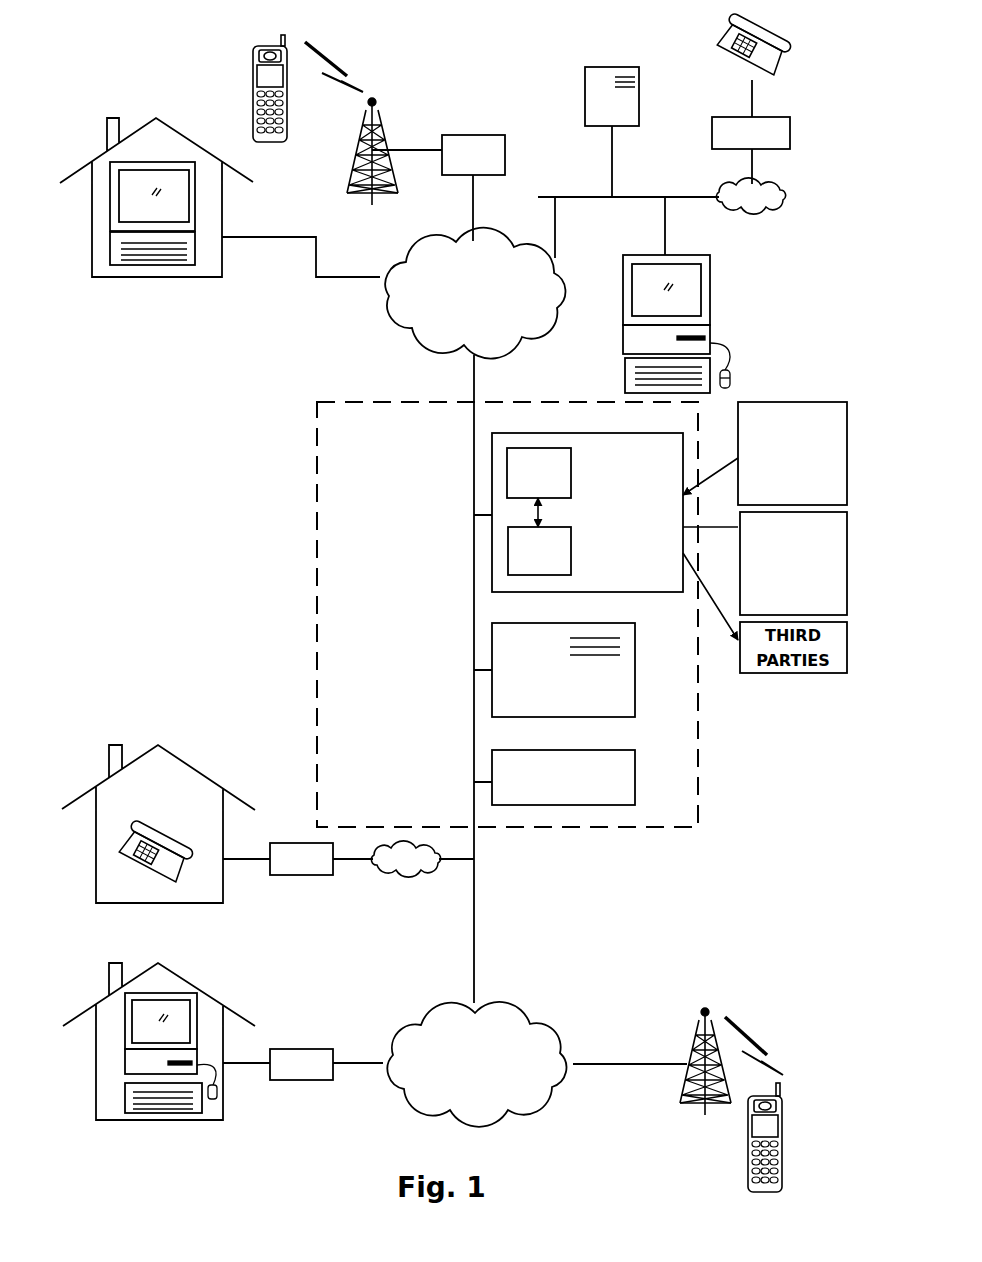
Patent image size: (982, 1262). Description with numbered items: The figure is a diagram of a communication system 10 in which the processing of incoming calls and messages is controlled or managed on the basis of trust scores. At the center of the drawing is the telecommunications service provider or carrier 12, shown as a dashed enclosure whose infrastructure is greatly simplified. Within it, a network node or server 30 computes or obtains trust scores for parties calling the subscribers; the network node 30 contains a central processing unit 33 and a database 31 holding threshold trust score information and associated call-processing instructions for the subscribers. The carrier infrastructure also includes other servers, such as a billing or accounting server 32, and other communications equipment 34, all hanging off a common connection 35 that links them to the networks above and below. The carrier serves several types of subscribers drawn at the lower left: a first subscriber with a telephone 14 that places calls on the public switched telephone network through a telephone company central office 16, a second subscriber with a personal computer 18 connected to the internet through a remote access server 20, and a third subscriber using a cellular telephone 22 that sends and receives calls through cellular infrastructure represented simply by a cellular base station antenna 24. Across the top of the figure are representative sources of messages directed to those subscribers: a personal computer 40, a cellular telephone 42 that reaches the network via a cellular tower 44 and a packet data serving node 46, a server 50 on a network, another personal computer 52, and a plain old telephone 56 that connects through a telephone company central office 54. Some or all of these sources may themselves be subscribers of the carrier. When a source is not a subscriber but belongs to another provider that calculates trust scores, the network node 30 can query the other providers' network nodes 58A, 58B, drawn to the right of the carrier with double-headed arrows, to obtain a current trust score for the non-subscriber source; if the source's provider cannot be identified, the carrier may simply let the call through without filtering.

The communication system 10 is at (178, 529).
The telecommunications service provider 12 is at (294, 625).
The telephone 14 is at (158, 880).
The telephone company central office 16 is at (293, 875).
The personal computer 18 is at (157, 1113).
The remote access server 20 is at (297, 1080).
The cellular telephone 22 is at (747, 1165).
The cellular base station antenna 24 is at (695, 1050).
The network node 30 is at (638, 592).
The database 31 is at (535, 448).
The billing or accounting server 32 is at (635, 695).
The central processing unit 33 is at (571, 565).
The other communications equipment 34 is at (635, 780).
The network communication bus 35 is at (472, 608).
The personal computer 40 is at (153, 265).
The cellular telephone 42 is at (250, 88).
The cellular tower 44 is at (362, 152).
The packet data serving node 46 is at (480, 135).
The server 50 is at (585, 110).
The personal computer 52 is at (710, 293).
The telephone company central office 54 is at (712, 135).
The plain old telephone 56 is at (718, 64).
The network node 58A is at (790, 402).
The network node 58B is at (740, 582).